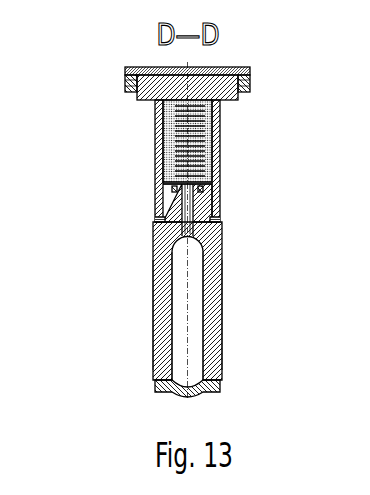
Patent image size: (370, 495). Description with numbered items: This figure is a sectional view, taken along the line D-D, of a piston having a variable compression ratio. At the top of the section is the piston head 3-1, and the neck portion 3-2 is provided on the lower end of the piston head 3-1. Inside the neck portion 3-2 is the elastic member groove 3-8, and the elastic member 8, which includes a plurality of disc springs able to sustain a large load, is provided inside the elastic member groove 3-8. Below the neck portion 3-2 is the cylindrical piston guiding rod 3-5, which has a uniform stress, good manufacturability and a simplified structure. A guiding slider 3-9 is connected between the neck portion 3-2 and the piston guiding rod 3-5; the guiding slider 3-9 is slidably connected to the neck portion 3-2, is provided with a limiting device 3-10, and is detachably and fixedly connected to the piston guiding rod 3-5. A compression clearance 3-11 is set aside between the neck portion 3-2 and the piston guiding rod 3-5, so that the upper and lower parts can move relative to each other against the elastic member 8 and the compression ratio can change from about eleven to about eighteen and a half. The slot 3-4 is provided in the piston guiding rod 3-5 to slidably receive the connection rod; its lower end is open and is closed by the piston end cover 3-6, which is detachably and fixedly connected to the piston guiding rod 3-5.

The piston head 3-1 is at (163, 78).
The neck portion 3-2 is at (157, 130).
The elastic member 8 is at (205, 120).
The elastic member groove 3-8 is at (207, 137).
The guiding slider 3-9 is at (173, 196).
The limiting device 3-10 is at (198, 192).
The compression clearance 3-11 is at (212, 223).
The slot 3-4 is at (192, 303).
The piston guiding rod 3-5 is at (163, 288).
The piston end cover 3-6 is at (160, 387).